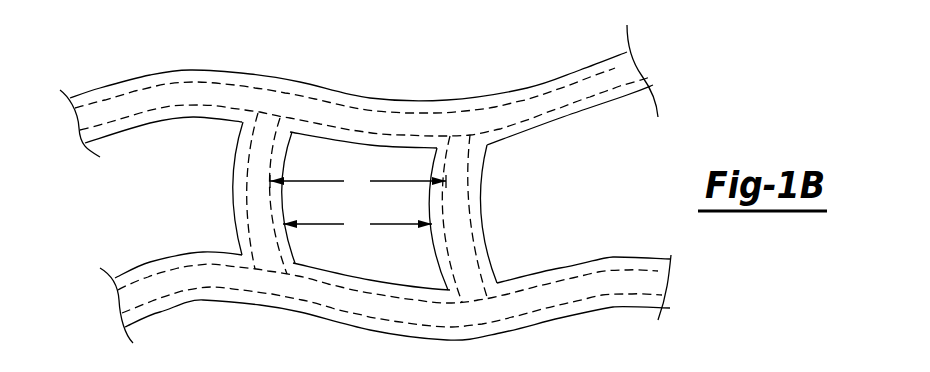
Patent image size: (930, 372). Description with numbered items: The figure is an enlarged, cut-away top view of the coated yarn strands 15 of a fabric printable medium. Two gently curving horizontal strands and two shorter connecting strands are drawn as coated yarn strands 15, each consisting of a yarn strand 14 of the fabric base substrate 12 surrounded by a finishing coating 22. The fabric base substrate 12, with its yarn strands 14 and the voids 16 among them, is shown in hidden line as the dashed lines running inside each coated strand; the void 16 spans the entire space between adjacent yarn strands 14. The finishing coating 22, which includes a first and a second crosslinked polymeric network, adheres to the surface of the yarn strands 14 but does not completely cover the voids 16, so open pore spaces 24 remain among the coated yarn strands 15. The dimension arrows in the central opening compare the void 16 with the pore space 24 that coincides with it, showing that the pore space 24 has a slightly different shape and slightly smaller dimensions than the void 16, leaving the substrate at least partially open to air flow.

The fabric base substrate 12 is at (359, 91).
The yarn strands 14 is at (303, 92).
The coated yarn strands 15 is at (457, 90).
The voids 16 is at (358, 182).
The finishing coating 22 is at (142, 82).
The pore spaces 24 is at (357, 224).